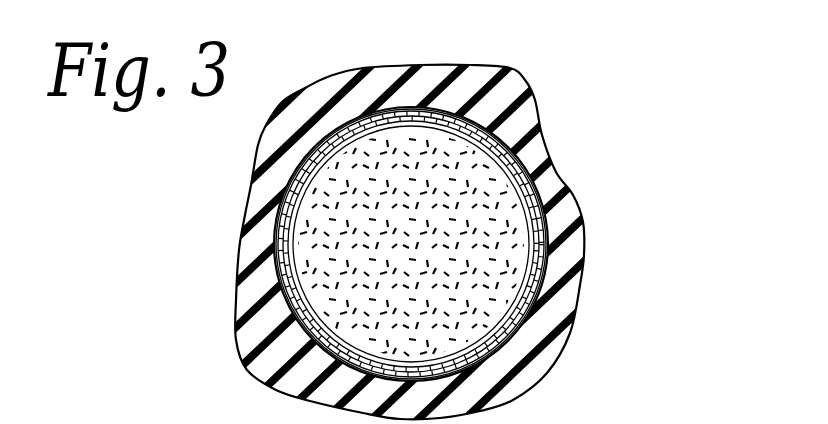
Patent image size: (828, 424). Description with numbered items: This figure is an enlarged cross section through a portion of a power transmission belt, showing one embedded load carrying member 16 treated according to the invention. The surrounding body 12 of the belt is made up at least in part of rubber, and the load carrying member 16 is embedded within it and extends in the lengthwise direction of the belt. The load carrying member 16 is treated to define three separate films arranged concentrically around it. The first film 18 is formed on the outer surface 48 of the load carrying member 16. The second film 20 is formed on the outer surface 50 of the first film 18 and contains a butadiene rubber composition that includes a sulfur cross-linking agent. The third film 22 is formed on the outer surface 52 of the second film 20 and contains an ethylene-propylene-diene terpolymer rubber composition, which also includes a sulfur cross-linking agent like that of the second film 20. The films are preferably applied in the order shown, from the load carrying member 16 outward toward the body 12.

The body 12 is at (477, 85).
The load carrying member 16 is at (510, 257).
The first film 18 is at (553, 195).
The second film 20 is at (533, 185).
The third film 22 is at (520, 158).
The outer surface of the load carrying member 48 is at (387, 112).
The outer surface of the first film 50 is at (425, 110).
The outer surface of the second film 52 is at (362, 117).